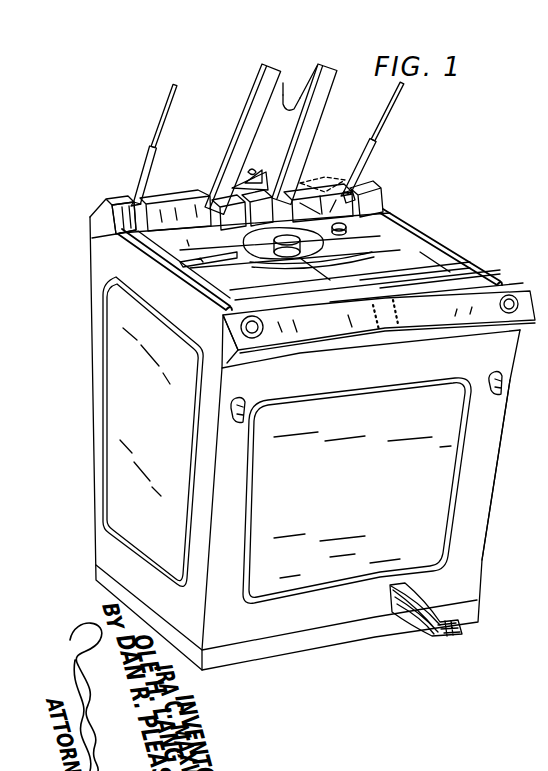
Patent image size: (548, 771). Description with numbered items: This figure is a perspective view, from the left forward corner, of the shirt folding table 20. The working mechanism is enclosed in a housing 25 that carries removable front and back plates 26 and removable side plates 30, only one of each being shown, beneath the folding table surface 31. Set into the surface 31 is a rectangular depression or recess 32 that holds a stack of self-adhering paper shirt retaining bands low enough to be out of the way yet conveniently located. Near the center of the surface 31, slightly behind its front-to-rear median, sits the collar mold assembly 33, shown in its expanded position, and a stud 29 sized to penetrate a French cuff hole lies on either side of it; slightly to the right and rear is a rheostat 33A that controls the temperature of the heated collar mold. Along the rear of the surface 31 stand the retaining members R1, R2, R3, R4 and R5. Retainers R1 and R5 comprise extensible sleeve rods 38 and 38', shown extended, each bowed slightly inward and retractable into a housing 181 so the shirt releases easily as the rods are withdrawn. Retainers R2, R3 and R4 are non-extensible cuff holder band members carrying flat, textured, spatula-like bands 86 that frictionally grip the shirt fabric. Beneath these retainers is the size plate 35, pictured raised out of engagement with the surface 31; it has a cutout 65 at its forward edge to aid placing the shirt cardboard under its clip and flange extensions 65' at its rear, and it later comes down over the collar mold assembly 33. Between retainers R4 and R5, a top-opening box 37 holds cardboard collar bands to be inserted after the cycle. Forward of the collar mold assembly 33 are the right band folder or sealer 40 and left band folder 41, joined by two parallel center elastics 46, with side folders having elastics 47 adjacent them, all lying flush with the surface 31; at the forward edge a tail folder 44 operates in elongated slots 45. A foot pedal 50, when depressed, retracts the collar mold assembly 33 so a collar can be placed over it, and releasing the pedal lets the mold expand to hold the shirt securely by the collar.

The shirt folding table 20 is at (83, 381).
The housing 25 is at (508, 451).
The front and back plates 26 is at (370, 489).
The stud 29 is at (200, 230).
The side plates 30 is at (162, 454).
The folding table surface 31 is at (460, 268).
The rectangular depression or recess 32 is at (427, 285).
The collar mold assembly 33 is at (265, 243).
The rheostat 33A is at (372, 215).
The size plate 35 is at (247, 120).
The box 37 is at (338, 175).
The sleeve rod 38 is at (145, 144).
The sleeve rod 38' is at (394, 138).
The right band folder or sealer 40 is at (425, 253).
The left band folder 41 is at (190, 275).
The tail folder 44 is at (295, 307).
The elongated apertures or slots 45 is at (212, 302).
The center elastics 46 is at (345, 257).
The elastics 47 is at (230, 260).
The foot pedal 50 is at (419, 603).
The cutout 65 is at (306, 78).
The flange extensions 65' is at (259, 164).
The band 86 is at (271, 78).
The housing 181 is at (126, 181).
The retaining member R1 is at (143, 157).
The retaining member R2 is at (210, 185).
The retaining member R3 is at (256, 181).
The retaining member R4 is at (333, 170).
The retaining member R5 is at (370, 161).